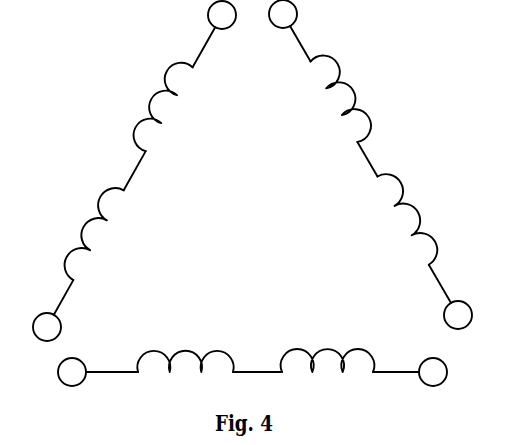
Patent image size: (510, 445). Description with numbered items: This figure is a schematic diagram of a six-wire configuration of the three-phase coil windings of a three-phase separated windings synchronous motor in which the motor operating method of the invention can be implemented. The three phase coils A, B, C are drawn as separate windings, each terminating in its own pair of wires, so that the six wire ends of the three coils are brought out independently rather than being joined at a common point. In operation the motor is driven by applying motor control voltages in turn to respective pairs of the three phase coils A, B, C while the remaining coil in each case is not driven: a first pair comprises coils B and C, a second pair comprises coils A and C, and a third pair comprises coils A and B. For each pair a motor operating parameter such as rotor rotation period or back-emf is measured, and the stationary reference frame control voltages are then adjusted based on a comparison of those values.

The phase coil A is at (328, 339).
The phase coil B is at (347, 99).
The phase coil C is at (88, 234).